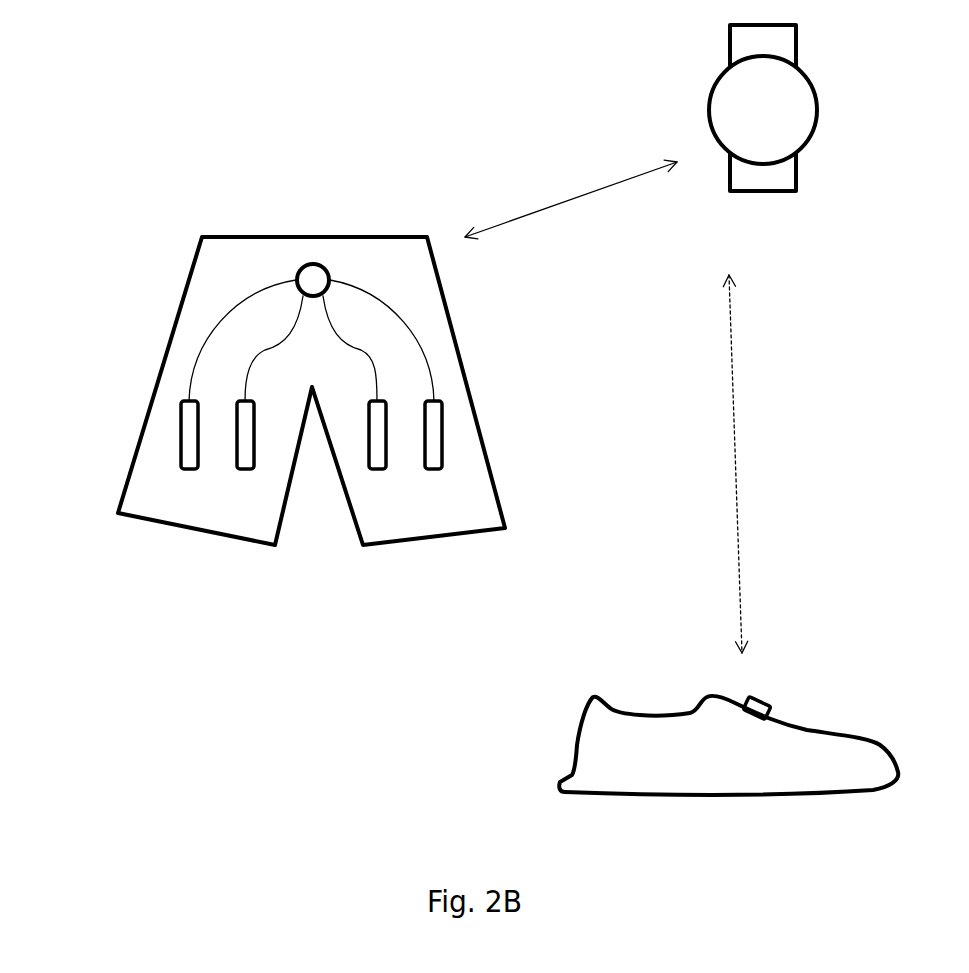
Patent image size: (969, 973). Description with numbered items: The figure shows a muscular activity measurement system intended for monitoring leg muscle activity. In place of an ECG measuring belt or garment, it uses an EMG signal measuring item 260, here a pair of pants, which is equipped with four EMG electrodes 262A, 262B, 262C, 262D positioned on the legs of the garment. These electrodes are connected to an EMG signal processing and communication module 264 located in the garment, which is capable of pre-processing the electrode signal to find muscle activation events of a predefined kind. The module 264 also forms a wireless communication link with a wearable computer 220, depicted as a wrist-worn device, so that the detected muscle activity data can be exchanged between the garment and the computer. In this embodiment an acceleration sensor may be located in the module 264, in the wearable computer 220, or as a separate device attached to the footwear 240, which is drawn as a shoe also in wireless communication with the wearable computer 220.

The wearable computer 220 is at (677, 78).
The footwear 240 is at (803, 692).
The EMG signal measuring item 260 is at (227, 623).
The EMG electrode 262A is at (181, 437).
The EMG electrode 262B is at (245, 469).
The EMG electrode 262C is at (442, 437).
The EMG electrode 262D is at (377, 469).
The EMG signal processing and communication module 264 is at (326, 263).